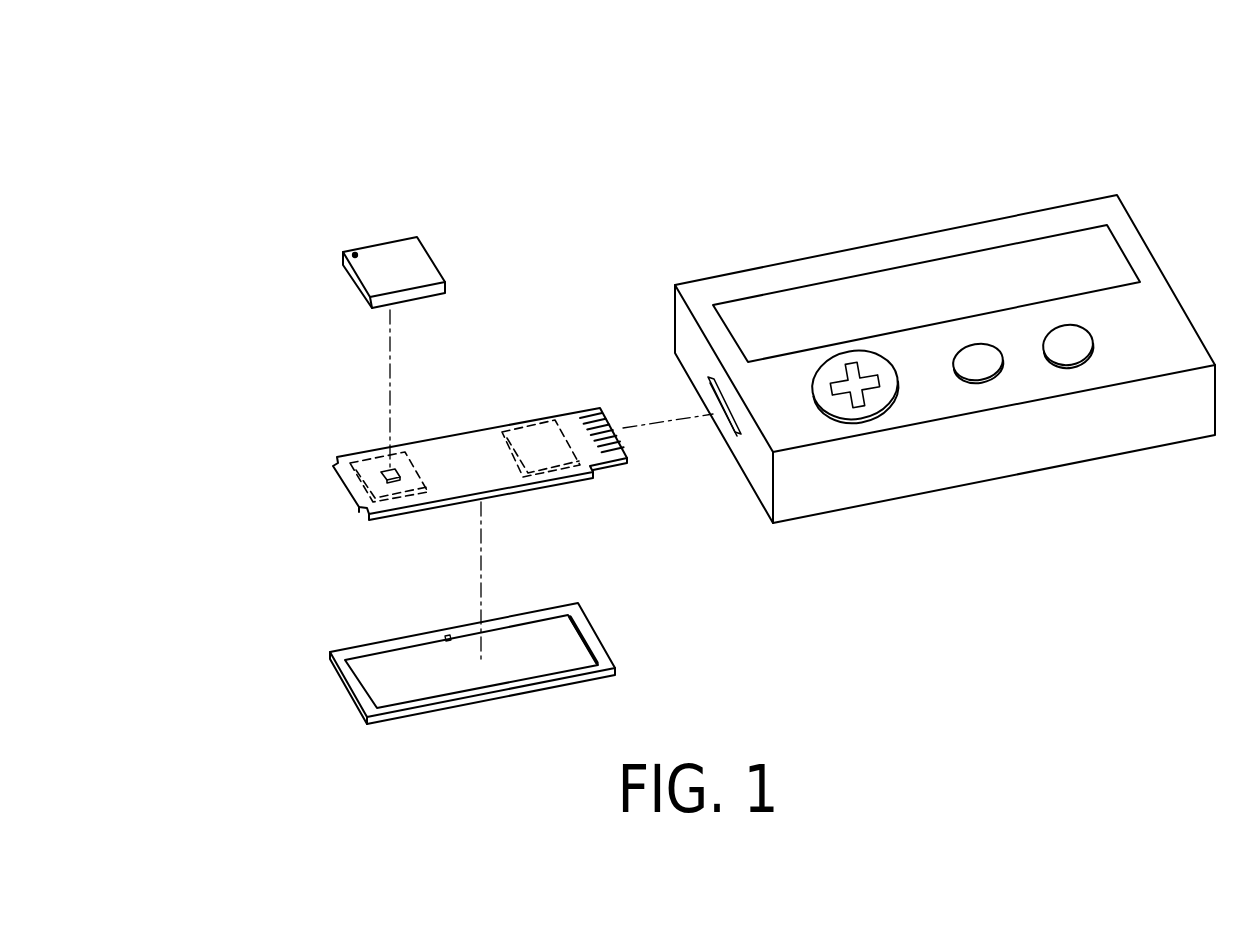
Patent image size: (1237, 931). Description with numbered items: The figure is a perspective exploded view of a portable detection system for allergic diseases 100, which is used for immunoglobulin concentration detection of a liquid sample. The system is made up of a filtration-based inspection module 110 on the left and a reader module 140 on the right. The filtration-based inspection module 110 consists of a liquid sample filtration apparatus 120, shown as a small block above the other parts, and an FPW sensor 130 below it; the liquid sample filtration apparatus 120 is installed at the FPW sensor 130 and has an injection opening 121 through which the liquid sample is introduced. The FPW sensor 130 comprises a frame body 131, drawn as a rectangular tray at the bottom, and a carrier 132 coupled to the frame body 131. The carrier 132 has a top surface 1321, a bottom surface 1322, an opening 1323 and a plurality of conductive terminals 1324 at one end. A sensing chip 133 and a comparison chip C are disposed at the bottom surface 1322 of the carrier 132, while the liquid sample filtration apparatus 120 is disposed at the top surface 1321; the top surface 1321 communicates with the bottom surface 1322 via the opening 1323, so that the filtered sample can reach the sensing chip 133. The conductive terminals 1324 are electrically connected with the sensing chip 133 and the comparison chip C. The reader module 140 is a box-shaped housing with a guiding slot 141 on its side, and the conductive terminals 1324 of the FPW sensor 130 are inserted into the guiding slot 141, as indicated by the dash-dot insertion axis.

The portable detection system for allergic diseases 100 is at (775, 141).
The filtration-based inspection module 110 is at (550, 251).
The liquid sample filtration apparatus 120 is at (417, 219).
The injection opening 121 is at (355, 252).
The FPW sensor 130 is at (282, 607).
The frame body 131 is at (343, 690).
The carrier 132 is at (345, 488).
The sensing chip 133 is at (392, 508).
The top surface 1321 is at (463, 440).
The bottom surface 1322 is at (512, 492).
The opening 1323 is at (380, 476).
The conductive terminals 1324 is at (588, 424).
The comparison chip C is at (560, 470).
The reader module 140 is at (939, 212).
The guiding slot 141 is at (735, 422).